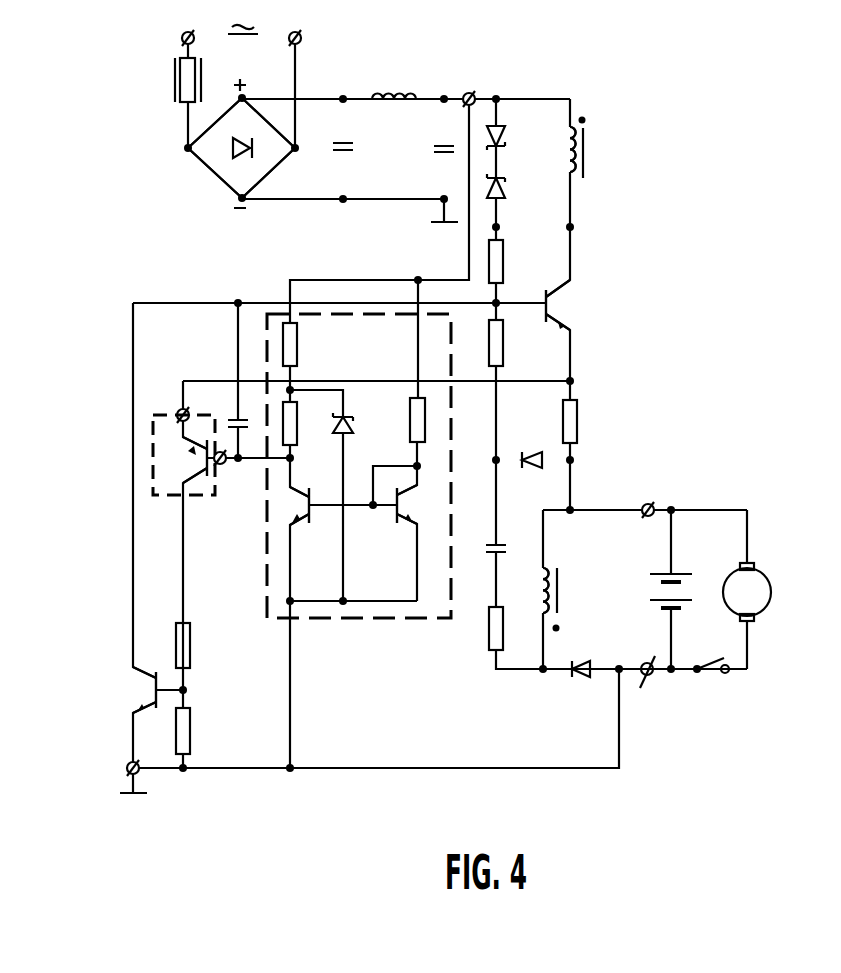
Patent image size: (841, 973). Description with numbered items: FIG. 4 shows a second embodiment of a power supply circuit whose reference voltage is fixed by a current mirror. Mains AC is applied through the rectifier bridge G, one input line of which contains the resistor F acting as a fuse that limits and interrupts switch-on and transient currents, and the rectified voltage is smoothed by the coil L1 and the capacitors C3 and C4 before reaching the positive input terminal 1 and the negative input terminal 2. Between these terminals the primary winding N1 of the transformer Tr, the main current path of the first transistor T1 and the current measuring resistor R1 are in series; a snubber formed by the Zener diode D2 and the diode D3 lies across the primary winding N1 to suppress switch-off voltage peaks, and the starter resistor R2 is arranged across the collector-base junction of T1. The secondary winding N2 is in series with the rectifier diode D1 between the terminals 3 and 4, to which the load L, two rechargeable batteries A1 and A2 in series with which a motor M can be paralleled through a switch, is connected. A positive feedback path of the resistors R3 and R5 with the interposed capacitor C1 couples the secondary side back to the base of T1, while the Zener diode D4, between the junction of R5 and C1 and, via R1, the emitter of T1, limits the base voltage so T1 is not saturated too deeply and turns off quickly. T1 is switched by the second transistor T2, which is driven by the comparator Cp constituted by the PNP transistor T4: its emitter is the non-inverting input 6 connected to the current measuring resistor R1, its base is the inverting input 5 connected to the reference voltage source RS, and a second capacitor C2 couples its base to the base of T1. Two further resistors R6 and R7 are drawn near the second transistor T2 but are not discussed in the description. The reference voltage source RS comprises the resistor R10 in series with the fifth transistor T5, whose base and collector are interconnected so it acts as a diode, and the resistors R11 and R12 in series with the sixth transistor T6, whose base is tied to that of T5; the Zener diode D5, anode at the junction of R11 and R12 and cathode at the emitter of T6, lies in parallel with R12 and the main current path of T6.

The positive input terminal 1 is at (468, 92).
The negative input terminal 2 is at (126, 767).
The terminal 3 is at (646, 504).
The terminal 4 is at (656, 686).
The inverting input 5 is at (226, 474).
The non-inverting input 6 is at (178, 408).
The resistor acting as fuse F is at (181, 80).
The rectifier bridge G is at (220, 162).
The coil L1 is at (421, 83).
The capacitor C3 is at (348, 152).
The capacitor C4 is at (442, 153).
The Zener diode D2 is at (505, 137).
The diode D3 is at (505, 190).
The transformer Tr is at (548, 360).
The primary winding N1 is at (574, 175).
The secondary winding N2 is at (541, 584).
The starter resistor R2 is at (507, 258).
The first transistor T1 is at (556, 303).
The resistor R5 is at (500, 342).
The current measuring resistor R1 is at (582, 418).
The Zener diode D4 is at (541, 468).
The capacitor C1 is at (487, 550).
The resistor R3 is at (490, 628).
The rectifier diode D1 is at (584, 688).
The rechargeable battery A1 is at (678, 572).
The rechargeable battery A2 is at (689, 605).
The load L is at (720, 600).
The motor M is at (747, 592).
The second transistor T2 is at (150, 690).
The resistor R6 is at (196, 641).
The resistor R7 is at (186, 730).
The second capacitor C2 is at (236, 414).
The PNP transistor T4 is at (204, 458).
The comparator Cp is at (163, 500).
The reference voltage source RS is at (316, 622).
The resistor R11 is at (294, 344).
The resistor R12 is at (301, 420).
The Zener diode D5 is at (352, 422).
The resistor R10 is at (425, 421).
The sixth transistor T6 is at (305, 505).
The fifth transistor T5 is at (407, 505).